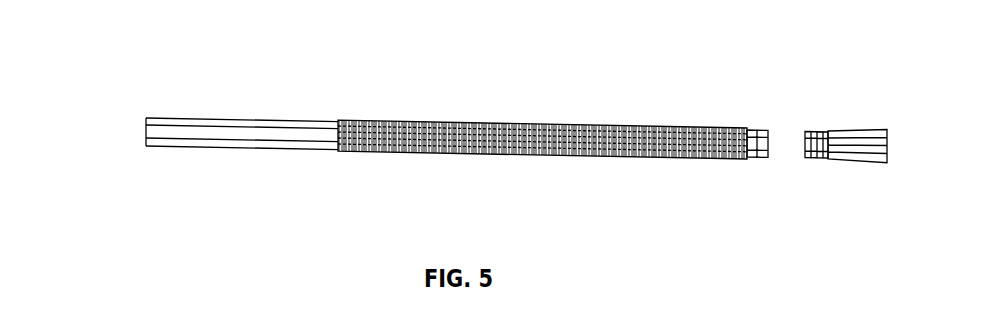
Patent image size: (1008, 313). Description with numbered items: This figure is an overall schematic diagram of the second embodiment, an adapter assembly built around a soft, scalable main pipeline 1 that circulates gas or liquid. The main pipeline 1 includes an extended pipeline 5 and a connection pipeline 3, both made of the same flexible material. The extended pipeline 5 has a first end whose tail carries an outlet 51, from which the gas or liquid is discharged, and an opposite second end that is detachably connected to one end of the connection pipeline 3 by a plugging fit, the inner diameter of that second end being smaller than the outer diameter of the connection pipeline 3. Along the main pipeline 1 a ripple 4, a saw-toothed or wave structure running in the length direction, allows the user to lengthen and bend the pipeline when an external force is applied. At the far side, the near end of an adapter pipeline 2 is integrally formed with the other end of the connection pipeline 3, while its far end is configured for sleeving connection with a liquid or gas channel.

The main pipeline 1 is at (242, 80).
The adapter pipeline 2 is at (866, 131).
The connection pipeline 3 is at (818, 160).
The ripple 4 is at (520, 125).
The extended pipeline 5 is at (313, 150).
The outlet 51 is at (146, 130).